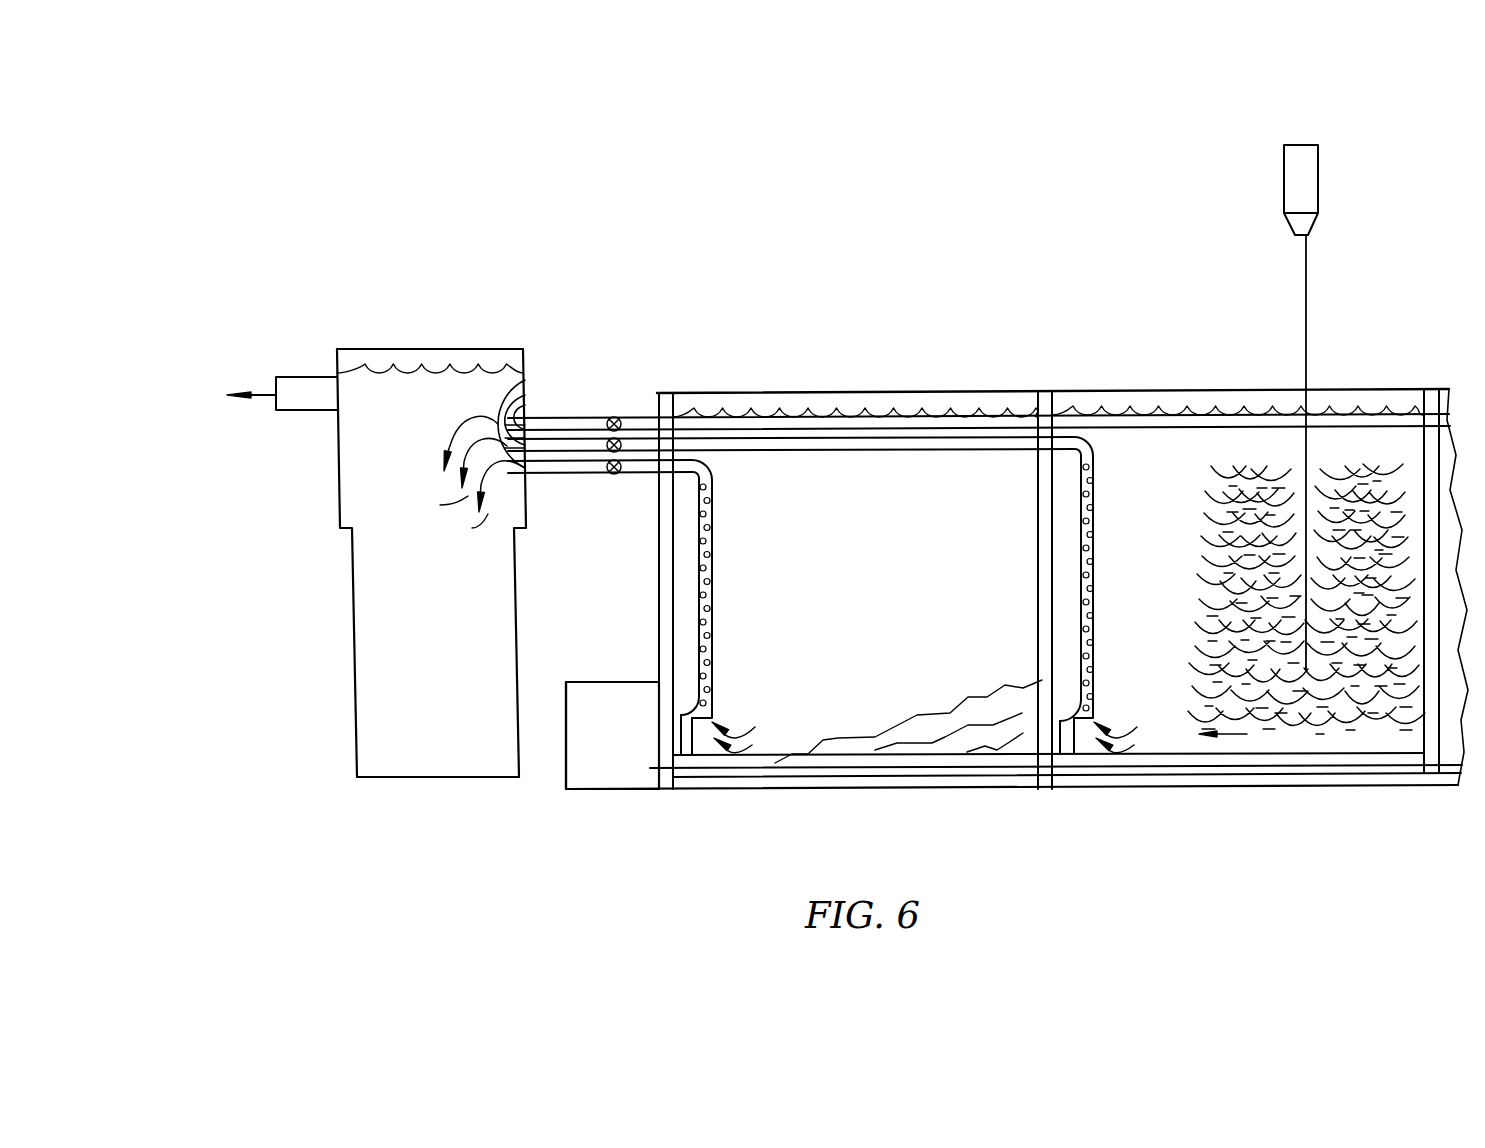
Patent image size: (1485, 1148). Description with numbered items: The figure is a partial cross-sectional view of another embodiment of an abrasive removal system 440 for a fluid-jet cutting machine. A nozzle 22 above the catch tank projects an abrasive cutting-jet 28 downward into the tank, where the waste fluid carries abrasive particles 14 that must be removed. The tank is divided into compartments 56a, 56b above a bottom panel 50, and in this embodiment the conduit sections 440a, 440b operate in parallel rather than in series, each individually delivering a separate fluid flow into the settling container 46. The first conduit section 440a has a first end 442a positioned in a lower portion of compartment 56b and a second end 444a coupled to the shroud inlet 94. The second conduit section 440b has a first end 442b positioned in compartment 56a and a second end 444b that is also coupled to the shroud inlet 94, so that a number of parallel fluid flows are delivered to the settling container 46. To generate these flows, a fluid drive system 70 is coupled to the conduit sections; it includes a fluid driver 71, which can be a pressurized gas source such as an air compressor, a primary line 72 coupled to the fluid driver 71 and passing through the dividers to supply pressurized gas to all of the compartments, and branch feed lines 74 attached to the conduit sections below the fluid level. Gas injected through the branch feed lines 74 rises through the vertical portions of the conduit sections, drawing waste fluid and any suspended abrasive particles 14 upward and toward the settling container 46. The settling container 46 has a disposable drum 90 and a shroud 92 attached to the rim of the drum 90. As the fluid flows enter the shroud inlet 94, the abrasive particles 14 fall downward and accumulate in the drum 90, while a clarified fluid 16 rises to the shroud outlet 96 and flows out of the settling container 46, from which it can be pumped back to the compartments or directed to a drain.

The abrasive particles 14 is at (1220, 510).
The clarified fluid 16 is at (266, 390).
The nozzle 22 is at (1319, 172).
The abrasive cutting-jet 28 is at (1307, 297).
The settling container 46 is at (316, 570).
The bottom panel 50 is at (950, 788).
The compartment 56a is at (849, 466).
The compartment 56b is at (1230, 450).
The fluid drive system 70 is at (552, 801).
The fluid driver 71 is at (590, 682).
The primary line 72 is at (872, 770).
The branch feed lines 74 is at (694, 745).
The disposable drum 90 is at (353, 679).
The shroud 92 is at (418, 349).
The shroud inlet 94 is at (527, 384).
The shroud outlet 96 is at (343, 380).
The abrasive removal system 440 is at (205, 318).
The first conduit section 440a is at (1098, 520).
The second conduit section 440b is at (713, 530).
The first end 442a is at (1170, 734).
The first end 442b is at (754, 733).
The second end 444a is at (545, 445).
The second end 444b is at (543, 474).